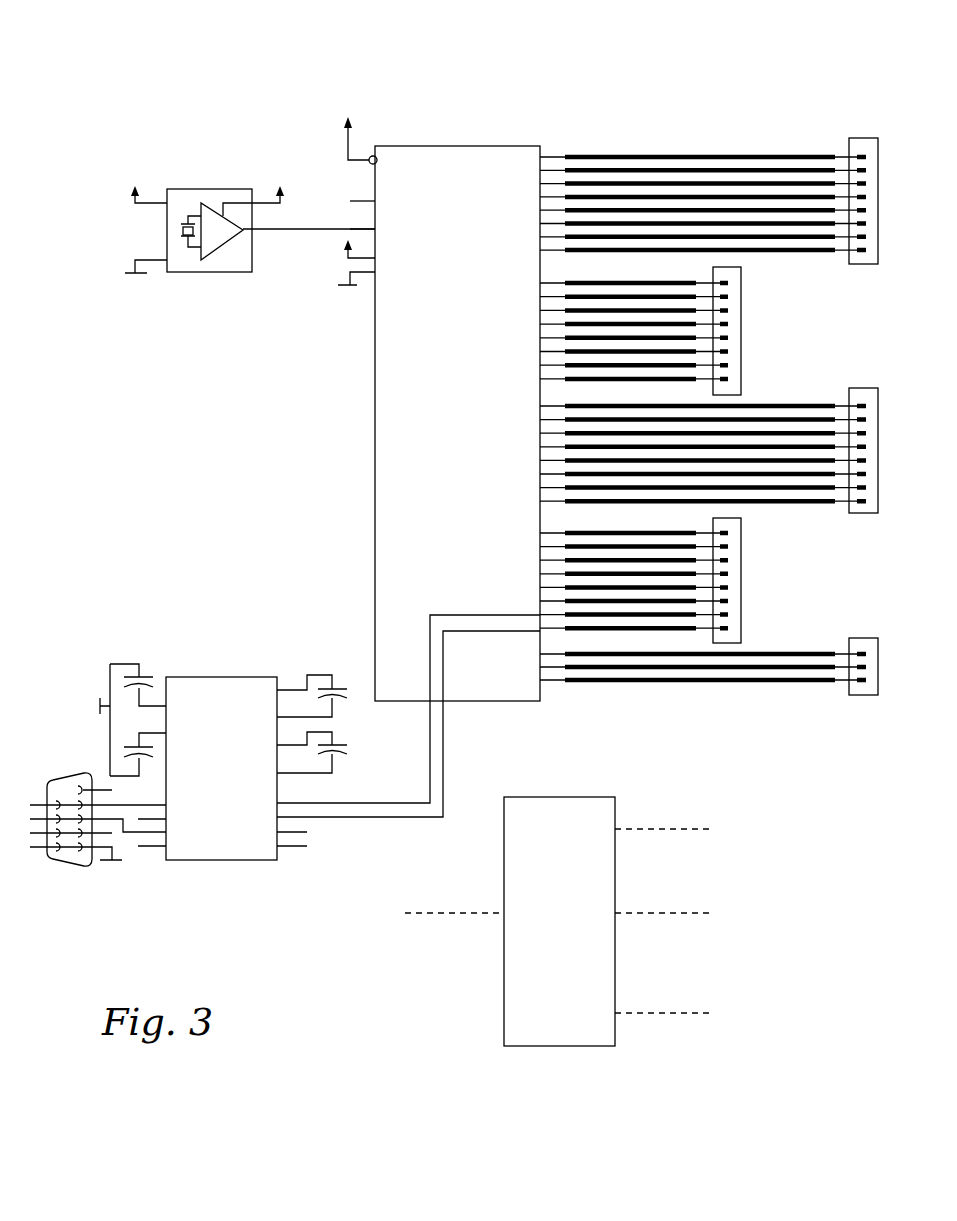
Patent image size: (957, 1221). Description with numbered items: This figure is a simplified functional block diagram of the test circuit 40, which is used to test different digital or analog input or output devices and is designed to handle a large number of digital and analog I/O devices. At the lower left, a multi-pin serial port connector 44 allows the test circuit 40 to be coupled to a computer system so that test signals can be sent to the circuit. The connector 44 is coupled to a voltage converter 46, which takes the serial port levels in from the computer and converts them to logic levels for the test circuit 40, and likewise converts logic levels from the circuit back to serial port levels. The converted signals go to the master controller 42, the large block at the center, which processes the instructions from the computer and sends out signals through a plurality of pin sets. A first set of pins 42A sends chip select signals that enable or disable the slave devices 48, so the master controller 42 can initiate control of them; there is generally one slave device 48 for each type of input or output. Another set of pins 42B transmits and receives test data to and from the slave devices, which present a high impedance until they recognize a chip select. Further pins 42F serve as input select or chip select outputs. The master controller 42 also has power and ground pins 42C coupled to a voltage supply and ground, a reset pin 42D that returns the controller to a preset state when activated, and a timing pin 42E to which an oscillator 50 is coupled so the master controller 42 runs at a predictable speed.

The test circuit 40 is at (768, 42).
The master controller 42 is at (490, 146).
The first set of pins 42A is at (851, 138).
The second set of pins 42B is at (741, 281).
The power and ground pins 42C is at (399, 272).
The reset pin 42D is at (377, 164).
The timing pin 42E is at (375, 229).
The input select output port 42F is at (849, 696).
The connector 44 is at (72, 866).
The voltage converter 46 is at (222, 677).
The slave devices 48 is at (565, 921).
The oscillator 50 is at (205, 273).